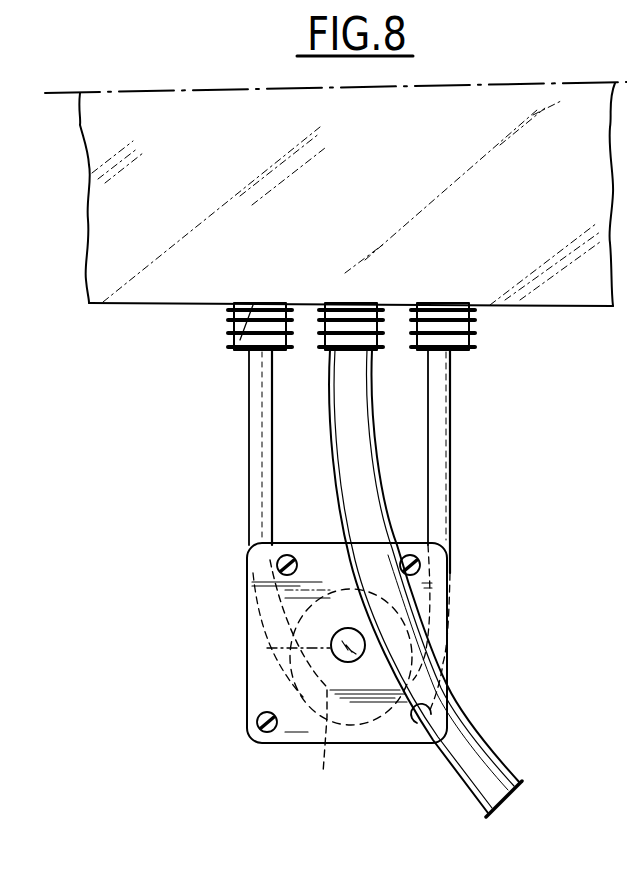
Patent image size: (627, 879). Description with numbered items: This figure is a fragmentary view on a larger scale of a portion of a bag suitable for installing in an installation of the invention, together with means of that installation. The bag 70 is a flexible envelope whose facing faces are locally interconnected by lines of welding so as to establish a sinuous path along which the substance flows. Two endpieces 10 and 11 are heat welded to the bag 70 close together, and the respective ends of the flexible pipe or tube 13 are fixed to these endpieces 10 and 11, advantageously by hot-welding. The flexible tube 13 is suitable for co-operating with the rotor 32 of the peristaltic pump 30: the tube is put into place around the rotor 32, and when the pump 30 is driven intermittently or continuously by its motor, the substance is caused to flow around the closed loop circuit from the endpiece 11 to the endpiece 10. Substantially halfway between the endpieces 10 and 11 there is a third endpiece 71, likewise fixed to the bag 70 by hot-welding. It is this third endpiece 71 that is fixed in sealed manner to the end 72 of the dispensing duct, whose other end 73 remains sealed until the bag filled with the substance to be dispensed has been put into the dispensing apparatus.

The bag 70 is at (381, 184).
The endpiece 10 is at (245, 306).
The third endpiece 71 is at (349, 306).
The endpiece 11 is at (440, 306).
The flexible pipe or tube 13 is at (250, 484).
The end of the duct 72 is at (355, 386).
The other end of the duct 73 is at (521, 788).
The pump 30 is at (478, 636).
The rotor 32 is at (301, 681).